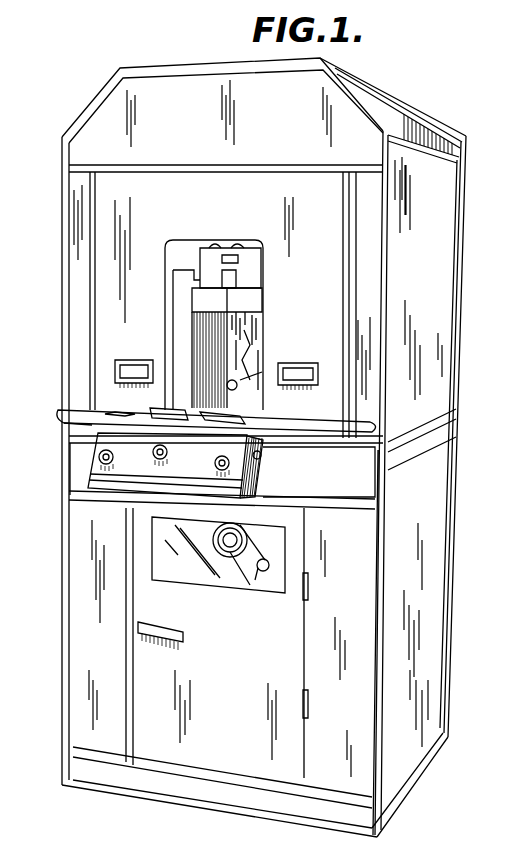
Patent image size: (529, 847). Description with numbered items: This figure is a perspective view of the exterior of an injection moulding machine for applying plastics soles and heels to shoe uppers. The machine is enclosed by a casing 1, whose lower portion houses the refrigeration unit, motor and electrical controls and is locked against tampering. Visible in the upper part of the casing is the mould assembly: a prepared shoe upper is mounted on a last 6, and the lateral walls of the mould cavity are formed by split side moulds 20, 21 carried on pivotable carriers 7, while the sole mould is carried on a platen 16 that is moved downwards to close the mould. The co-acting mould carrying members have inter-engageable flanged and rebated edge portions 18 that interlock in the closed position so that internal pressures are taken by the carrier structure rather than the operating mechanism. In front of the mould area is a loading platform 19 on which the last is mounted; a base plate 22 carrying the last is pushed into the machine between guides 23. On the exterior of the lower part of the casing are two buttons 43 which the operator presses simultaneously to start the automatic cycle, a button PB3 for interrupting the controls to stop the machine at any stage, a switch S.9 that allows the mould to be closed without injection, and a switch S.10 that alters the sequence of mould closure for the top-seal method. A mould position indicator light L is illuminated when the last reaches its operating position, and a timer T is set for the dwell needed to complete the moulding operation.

The casing 1 is at (428, 393).
The last 6 is at (245, 333).
The carriers 7 is at (205, 337).
The platen 16 is at (198, 250).
The flanged and rebated edge portions 18 is at (187, 283).
The loading platform 19 is at (95, 435).
The split side mould 20 is at (200, 297).
The split side mould 21 is at (255, 298).
The base plate 22 is at (230, 418).
The guides 23 is at (190, 400).
The buttons 43 is at (97, 456).
The mould position indicator light L is at (238, 260).
The button PB3 is at (150, 452).
The switch S.9 is at (272, 452).
The switch S.10 is at (262, 588).
The timer T is at (222, 558).